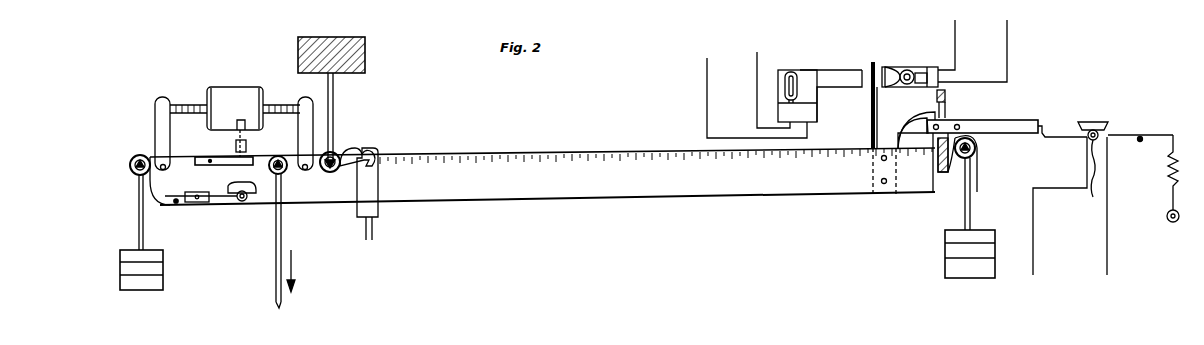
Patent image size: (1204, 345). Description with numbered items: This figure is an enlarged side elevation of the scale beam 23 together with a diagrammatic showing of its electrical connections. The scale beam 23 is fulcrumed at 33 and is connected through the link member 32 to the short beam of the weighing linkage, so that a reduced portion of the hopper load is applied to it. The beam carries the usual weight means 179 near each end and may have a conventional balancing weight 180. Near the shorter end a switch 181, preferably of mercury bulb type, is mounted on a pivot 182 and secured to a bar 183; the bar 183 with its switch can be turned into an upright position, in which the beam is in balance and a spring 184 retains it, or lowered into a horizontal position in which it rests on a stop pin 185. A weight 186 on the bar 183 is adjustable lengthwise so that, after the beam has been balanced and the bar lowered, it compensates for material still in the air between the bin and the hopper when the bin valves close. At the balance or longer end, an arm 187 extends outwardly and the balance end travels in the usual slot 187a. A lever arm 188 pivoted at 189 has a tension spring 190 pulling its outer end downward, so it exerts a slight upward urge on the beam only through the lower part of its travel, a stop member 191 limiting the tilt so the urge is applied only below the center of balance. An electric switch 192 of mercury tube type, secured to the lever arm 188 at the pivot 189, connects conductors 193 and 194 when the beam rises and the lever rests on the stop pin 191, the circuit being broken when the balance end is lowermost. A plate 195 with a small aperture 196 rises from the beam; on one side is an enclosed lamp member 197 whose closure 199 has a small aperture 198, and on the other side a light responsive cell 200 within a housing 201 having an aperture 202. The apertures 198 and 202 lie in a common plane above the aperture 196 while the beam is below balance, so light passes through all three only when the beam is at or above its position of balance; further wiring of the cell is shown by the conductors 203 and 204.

The scale beam 23 is at (465, 202).
The link member 32 is at (284, 248).
The fulcrum 33 is at (346, 148).
The weight means 179 is at (127, 289).
The balancing weight 180 is at (241, 88).
The switch 181 is at (231, 182).
The pivot 182 is at (245, 201).
The bar 183 is at (222, 199).
The spring 184 is at (222, 158).
The stop pin 185 is at (176, 203).
The weight 186 is at (200, 203).
The arm 187 is at (1003, 120).
The slot 187a is at (946, 104).
The lever arm 188 is at (1121, 132).
The pivot 189 is at (1085, 176).
The tension spring 190 is at (1167, 176).
The stop member 191 is at (1140, 142).
The electric switch 192 is at (1099, 121).
The conductor 193 is at (1107, 226).
The conductor 194 is at (1072, 190).
The plate 195 is at (871, 126).
The aperture 196 is at (870, 95).
The lamp member 197 is at (910, 70).
The aperture 198 is at (886, 67).
The closure 199 is at (932, 66).
The light responsive cell 200 is at (792, 70).
The housing 201 is at (812, 68).
The aperture 202 is at (860, 70).
The conductor 203 is at (751, 70).
The conductor 204 is at (700, 108).